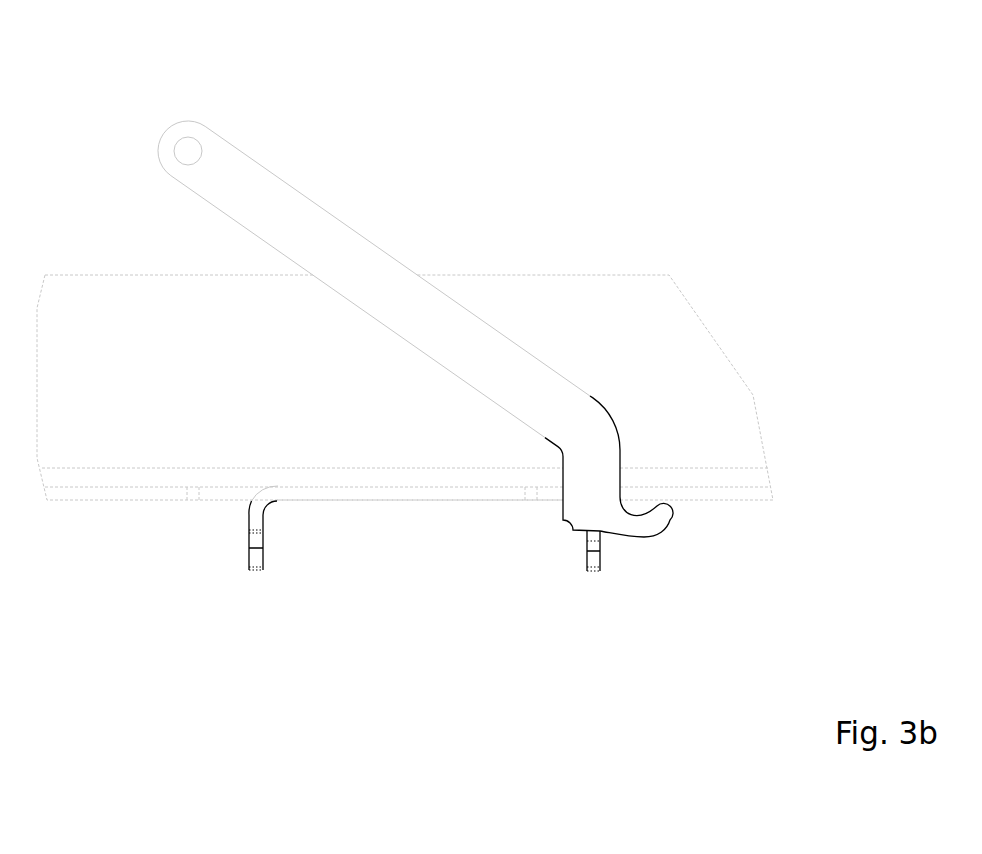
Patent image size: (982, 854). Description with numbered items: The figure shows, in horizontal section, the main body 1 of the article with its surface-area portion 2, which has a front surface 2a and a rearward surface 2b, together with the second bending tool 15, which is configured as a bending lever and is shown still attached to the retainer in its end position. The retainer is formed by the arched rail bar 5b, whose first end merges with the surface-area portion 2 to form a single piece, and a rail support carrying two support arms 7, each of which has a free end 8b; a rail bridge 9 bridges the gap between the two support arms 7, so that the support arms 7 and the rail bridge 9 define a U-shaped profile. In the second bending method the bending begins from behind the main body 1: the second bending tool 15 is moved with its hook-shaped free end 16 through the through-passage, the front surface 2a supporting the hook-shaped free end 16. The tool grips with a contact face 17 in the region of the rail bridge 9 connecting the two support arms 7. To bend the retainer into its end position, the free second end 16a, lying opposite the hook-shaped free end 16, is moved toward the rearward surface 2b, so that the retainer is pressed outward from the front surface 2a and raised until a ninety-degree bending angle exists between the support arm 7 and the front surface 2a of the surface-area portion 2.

The main body 1 is at (550, 320).
The surface-area portion 2 is at (320, 580).
The front surface 2a is at (457, 515).
The rearward surface 2b is at (172, 450).
The arched rail bar 5b is at (257, 512).
The support arm 7 is at (285, 542).
The free end 8b is at (257, 572).
The rail bridge 9 is at (253, 540).
The second bending tool 15 is at (442, 337).
The hook-shaped free end 16 is at (666, 507).
The free second end 16a is at (233, 187).
The contact face 17 is at (628, 552).